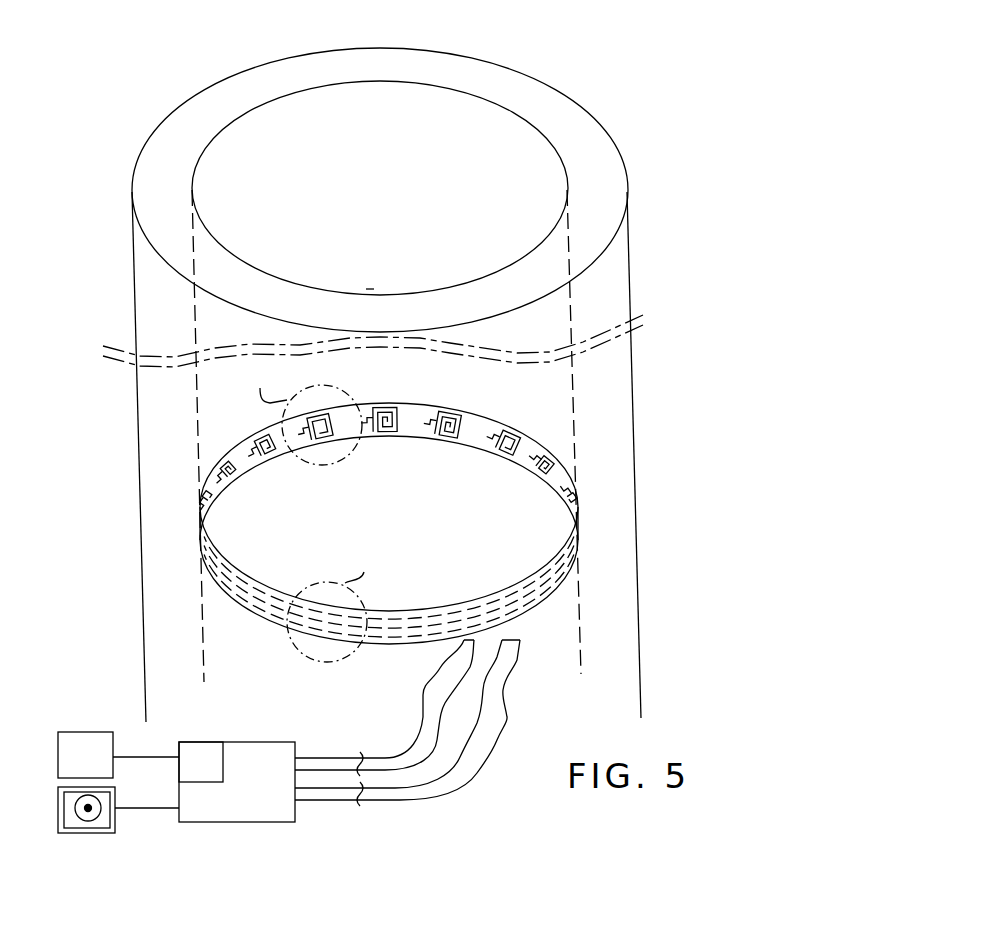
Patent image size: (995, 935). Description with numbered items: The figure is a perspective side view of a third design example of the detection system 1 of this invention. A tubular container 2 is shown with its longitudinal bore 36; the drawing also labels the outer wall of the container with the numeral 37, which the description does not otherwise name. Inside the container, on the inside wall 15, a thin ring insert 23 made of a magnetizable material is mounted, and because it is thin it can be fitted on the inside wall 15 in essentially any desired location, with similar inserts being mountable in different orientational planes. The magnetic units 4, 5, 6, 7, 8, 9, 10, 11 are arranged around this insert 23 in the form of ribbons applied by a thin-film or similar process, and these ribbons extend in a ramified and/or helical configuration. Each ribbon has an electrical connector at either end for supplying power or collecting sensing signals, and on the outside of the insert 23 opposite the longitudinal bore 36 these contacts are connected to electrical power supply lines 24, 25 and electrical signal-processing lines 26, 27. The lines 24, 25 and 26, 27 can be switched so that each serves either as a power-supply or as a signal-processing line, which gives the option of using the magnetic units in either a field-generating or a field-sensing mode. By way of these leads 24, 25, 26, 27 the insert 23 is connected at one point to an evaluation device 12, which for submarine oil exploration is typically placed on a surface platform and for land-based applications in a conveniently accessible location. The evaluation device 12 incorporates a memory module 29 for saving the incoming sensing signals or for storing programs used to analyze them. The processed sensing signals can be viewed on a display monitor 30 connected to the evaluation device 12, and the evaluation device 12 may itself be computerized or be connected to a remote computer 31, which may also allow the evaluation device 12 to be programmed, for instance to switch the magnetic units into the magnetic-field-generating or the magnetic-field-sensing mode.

The detection system 1 is at (650, 83).
The tubular container 2 is at (633, 362).
The magnetic unit 4 is at (328, 450).
The magnetic unit 5 is at (279, 455).
The magnetic unit 6 is at (247, 489).
The magnetic unit 7 is at (225, 519).
The magnetic unit 8 is at (521, 486).
The magnetic unit 9 is at (486, 466).
The magnetic unit 10 is at (443, 449).
The magnetic unit 11 is at (388, 447).
The evaluation device 12 is at (246, 727).
The inside wall 15 is at (327, 291).
The insert 23 is at (533, 438).
The electrical power supply line 24 is at (423, 688).
The electrical power supply line 25 is at (410, 766).
The electrical signal-processing line 26 is at (452, 758).
The electrical signal-processing line 27 is at (480, 747).
The memory module 29 is at (216, 778).
The display monitor 30 is at (115, 822).
The remote computer 31 is at (100, 768).
The longitudinal bore 36 is at (390, 113).
The outer pipe wall 37 is at (593, 150).